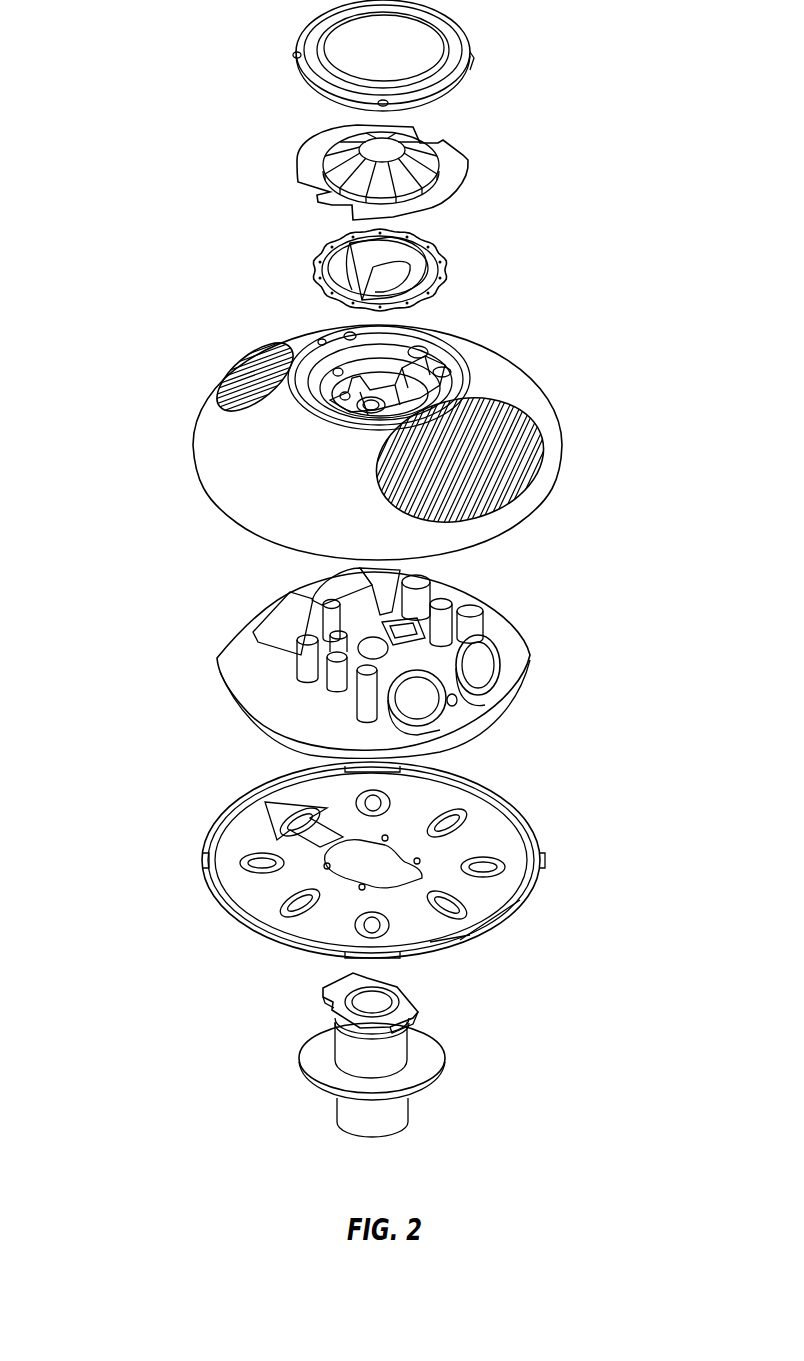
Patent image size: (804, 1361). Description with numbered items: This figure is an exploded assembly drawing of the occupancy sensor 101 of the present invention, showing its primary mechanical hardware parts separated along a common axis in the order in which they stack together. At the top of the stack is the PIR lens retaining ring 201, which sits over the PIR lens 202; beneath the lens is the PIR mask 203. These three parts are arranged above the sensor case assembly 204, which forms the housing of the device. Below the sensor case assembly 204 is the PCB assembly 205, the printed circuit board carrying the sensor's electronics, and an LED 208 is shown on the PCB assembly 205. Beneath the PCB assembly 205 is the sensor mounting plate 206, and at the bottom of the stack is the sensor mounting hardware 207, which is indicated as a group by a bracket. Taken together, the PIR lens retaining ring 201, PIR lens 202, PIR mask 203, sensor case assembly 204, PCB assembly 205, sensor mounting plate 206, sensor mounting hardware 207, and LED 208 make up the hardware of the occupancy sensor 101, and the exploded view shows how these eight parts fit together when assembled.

The occupancy sensor 101 is at (148, 0).
The PIR lens retaining ring 201 is at (470, 55).
The PIR lens 202 is at (468, 178).
The PIR mask 203 is at (447, 277).
The sensor case assembly 204 is at (565, 458).
The PCB assembly 205 is at (532, 657).
The sensor mounting plate 206 is at (547, 855).
The sensor mounting hardware 207 is at (487, 1157).
The LED 208 is at (457, 703).